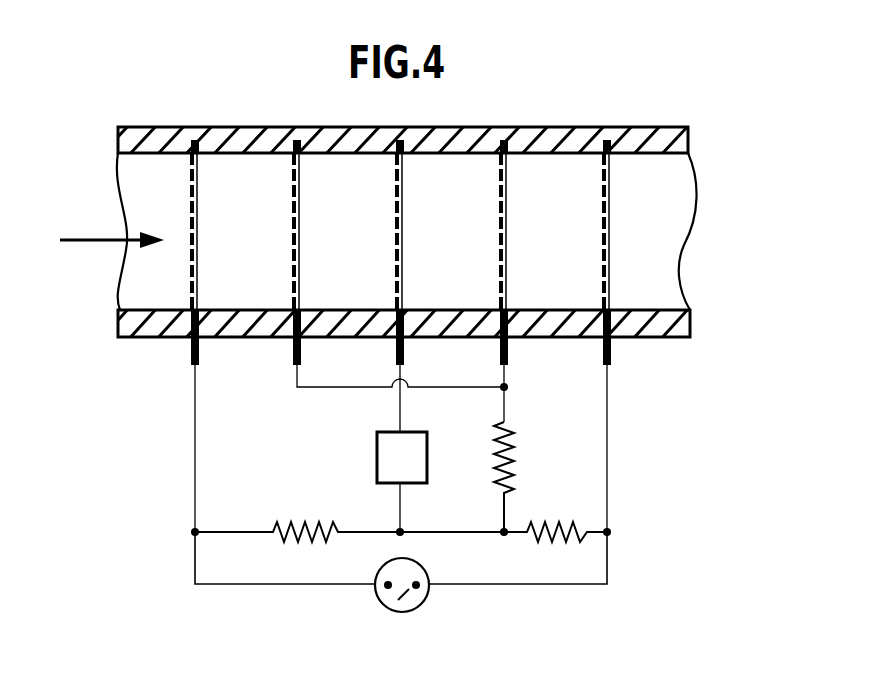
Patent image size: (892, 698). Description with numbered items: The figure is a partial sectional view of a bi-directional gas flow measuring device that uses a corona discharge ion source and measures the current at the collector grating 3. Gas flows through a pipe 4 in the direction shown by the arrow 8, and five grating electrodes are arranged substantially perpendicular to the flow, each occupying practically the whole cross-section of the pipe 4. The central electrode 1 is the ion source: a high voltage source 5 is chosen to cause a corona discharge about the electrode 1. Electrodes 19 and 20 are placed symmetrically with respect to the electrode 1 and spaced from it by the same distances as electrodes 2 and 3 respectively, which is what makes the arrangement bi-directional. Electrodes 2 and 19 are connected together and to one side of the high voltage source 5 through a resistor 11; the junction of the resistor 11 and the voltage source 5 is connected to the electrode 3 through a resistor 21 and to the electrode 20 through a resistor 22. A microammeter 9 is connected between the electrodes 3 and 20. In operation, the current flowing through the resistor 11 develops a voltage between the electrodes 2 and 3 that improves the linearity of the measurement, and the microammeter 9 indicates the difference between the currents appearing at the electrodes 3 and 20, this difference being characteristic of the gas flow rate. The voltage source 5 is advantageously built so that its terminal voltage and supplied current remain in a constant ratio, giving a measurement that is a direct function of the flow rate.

The pipe 4 is at (232, 135).
The arrow 8 is at (112, 230).
The electrode 20 is at (190, 215).
The electrode 19 is at (292, 218).
The electrode 1 is at (396, 222).
The electrode 2 is at (500, 216).
The collector grating 3 is at (612, 214).
The high voltage source 5 is at (378, 462).
The resistor 11 is at (494, 468).
The resistor 22 is at (302, 524).
The resistor 21 is at (554, 524).
The microammeter 9 is at (384, 600).